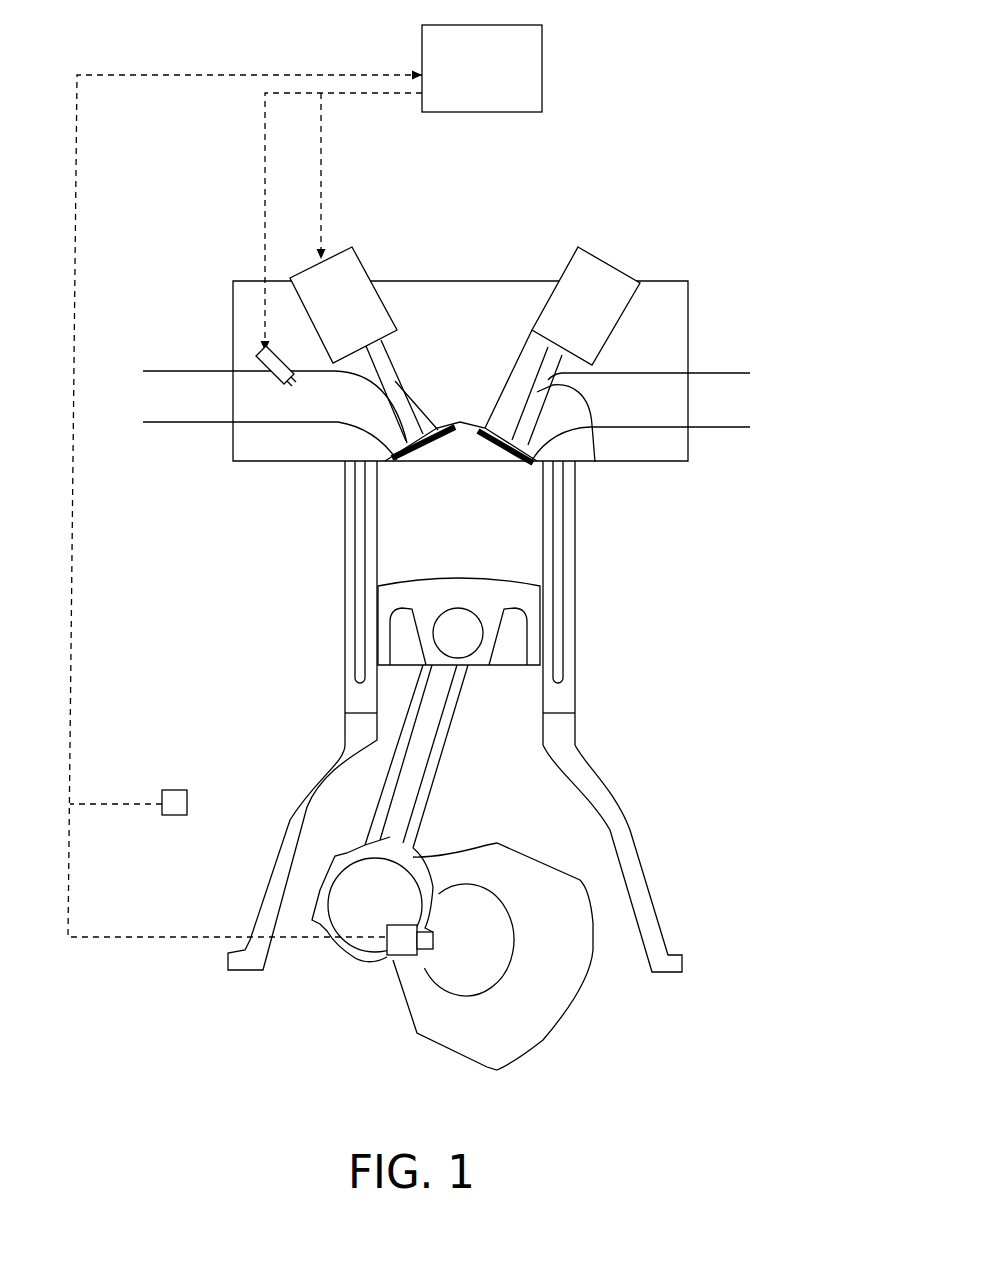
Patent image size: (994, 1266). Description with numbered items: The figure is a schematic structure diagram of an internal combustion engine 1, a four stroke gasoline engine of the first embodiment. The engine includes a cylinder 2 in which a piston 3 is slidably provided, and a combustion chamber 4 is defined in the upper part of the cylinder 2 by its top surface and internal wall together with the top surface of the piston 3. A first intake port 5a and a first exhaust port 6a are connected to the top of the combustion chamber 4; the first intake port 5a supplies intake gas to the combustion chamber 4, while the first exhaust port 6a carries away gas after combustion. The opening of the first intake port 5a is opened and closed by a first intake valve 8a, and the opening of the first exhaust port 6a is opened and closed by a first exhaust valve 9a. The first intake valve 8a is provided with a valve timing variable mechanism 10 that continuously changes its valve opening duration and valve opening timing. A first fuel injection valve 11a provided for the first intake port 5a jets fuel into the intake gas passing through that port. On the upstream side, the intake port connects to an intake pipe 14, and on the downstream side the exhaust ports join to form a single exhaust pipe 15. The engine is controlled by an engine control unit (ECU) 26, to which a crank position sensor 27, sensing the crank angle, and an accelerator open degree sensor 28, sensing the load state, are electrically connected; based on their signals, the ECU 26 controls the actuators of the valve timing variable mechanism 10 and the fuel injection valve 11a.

The internal combustion engine 1 is at (226, 675).
The cylinder 2 is at (543, 550).
The piston 3 is at (518, 598).
The combustion chamber 4 is at (505, 471).
The first intake port 5a is at (340, 415).
The first exhaust port 6a is at (650, 418).
The first intake valve 8a is at (396, 383).
The first exhaust valve 9a is at (594, 463).
The valve timing variable mechanism 10 is at (340, 250).
The first fuel injection valve 11a is at (252, 371).
The intake pipe 14 is at (175, 422).
The exhaust pipe 15 is at (727, 427).
The engine control unit (ECU) 26 is at (543, 53).
The crank position sensor 27 is at (405, 952).
The accelerator open degree sensor 28 is at (173, 815).